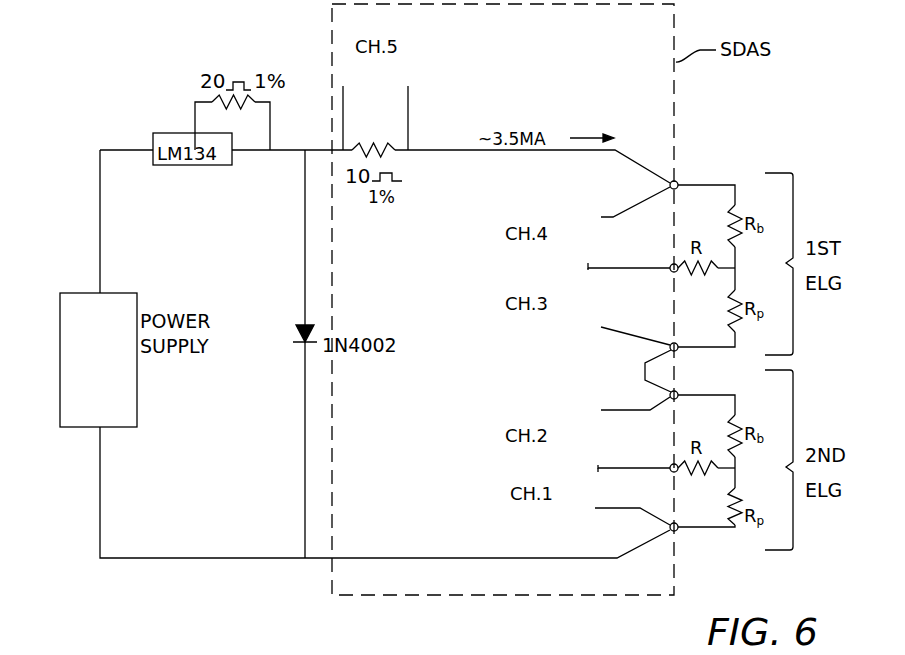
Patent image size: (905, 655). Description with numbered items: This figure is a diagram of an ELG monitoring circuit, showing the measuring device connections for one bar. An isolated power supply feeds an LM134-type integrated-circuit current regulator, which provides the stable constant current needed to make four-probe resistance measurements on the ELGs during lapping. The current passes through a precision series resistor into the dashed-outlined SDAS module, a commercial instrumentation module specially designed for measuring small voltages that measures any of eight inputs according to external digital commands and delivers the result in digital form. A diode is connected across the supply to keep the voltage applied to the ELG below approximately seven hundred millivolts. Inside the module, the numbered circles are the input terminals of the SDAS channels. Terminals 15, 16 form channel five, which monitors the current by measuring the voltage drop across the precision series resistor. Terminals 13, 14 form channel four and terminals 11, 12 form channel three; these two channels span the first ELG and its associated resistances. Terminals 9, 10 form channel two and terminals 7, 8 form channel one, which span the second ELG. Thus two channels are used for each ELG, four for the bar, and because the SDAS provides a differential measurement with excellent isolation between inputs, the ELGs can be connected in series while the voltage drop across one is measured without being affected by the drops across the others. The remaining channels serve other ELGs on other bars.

The SDAS channel 5 input terminal 15 is at (343, 105).
The SDAS channel 5 input terminal 16 is at (408, 105).
The SDAS channel 4 input terminal 13 is at (622, 208).
The SDAS channel 4 input terminal 14 is at (622, 252).
The SDAS channel 3 input terminal 11 is at (588, 282).
The SDAS channel 3 input terminal 12 is at (622, 328).
The SDAS channel 2 input terminal 9 is at (622, 410).
The SDAS channel 2 input terminal 10 is at (627, 453).
The SDAS channel 1 input terminal 7 is at (598, 483).
The SDAS channel 1 input terminal 8 is at (619, 510).